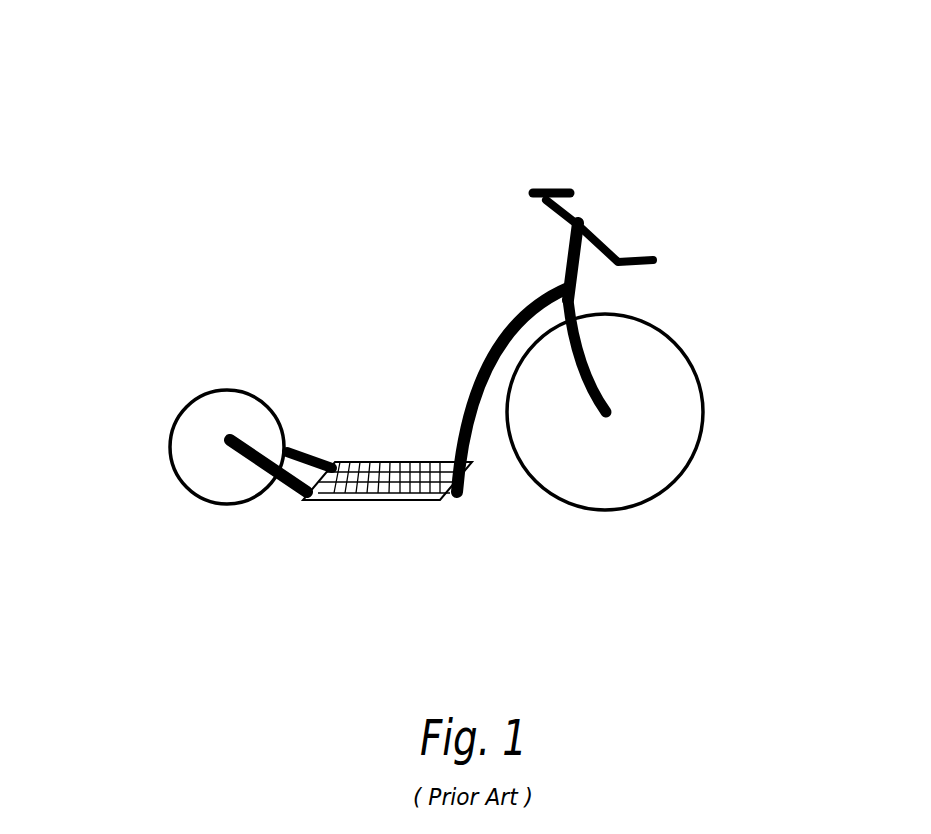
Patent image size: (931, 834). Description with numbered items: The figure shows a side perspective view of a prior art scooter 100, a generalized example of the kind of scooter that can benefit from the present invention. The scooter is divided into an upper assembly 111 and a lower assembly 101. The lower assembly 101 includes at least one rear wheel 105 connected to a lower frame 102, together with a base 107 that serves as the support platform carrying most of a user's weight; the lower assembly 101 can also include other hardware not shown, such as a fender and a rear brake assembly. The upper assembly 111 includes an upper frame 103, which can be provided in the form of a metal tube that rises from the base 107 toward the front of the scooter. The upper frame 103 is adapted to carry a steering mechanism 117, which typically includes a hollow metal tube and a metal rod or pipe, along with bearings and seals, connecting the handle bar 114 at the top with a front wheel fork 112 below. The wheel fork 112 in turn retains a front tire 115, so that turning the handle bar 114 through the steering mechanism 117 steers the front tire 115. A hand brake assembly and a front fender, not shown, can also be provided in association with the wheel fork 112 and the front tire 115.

The prior art scooter 100 is at (429, 112).
The lower assembly 101 is at (483, 525).
The lower frame 102 is at (317, 450).
The upper frame 103 is at (489, 325).
The rear wheel 105 is at (197, 418).
The base 107 is at (383, 450).
The upper assembly 111 is at (715, 222).
The front wheel fork 112 is at (583, 418).
The handle bar 114 is at (608, 247).
The front tire 115 is at (647, 480).
The steering mechanism 117 is at (552, 260).